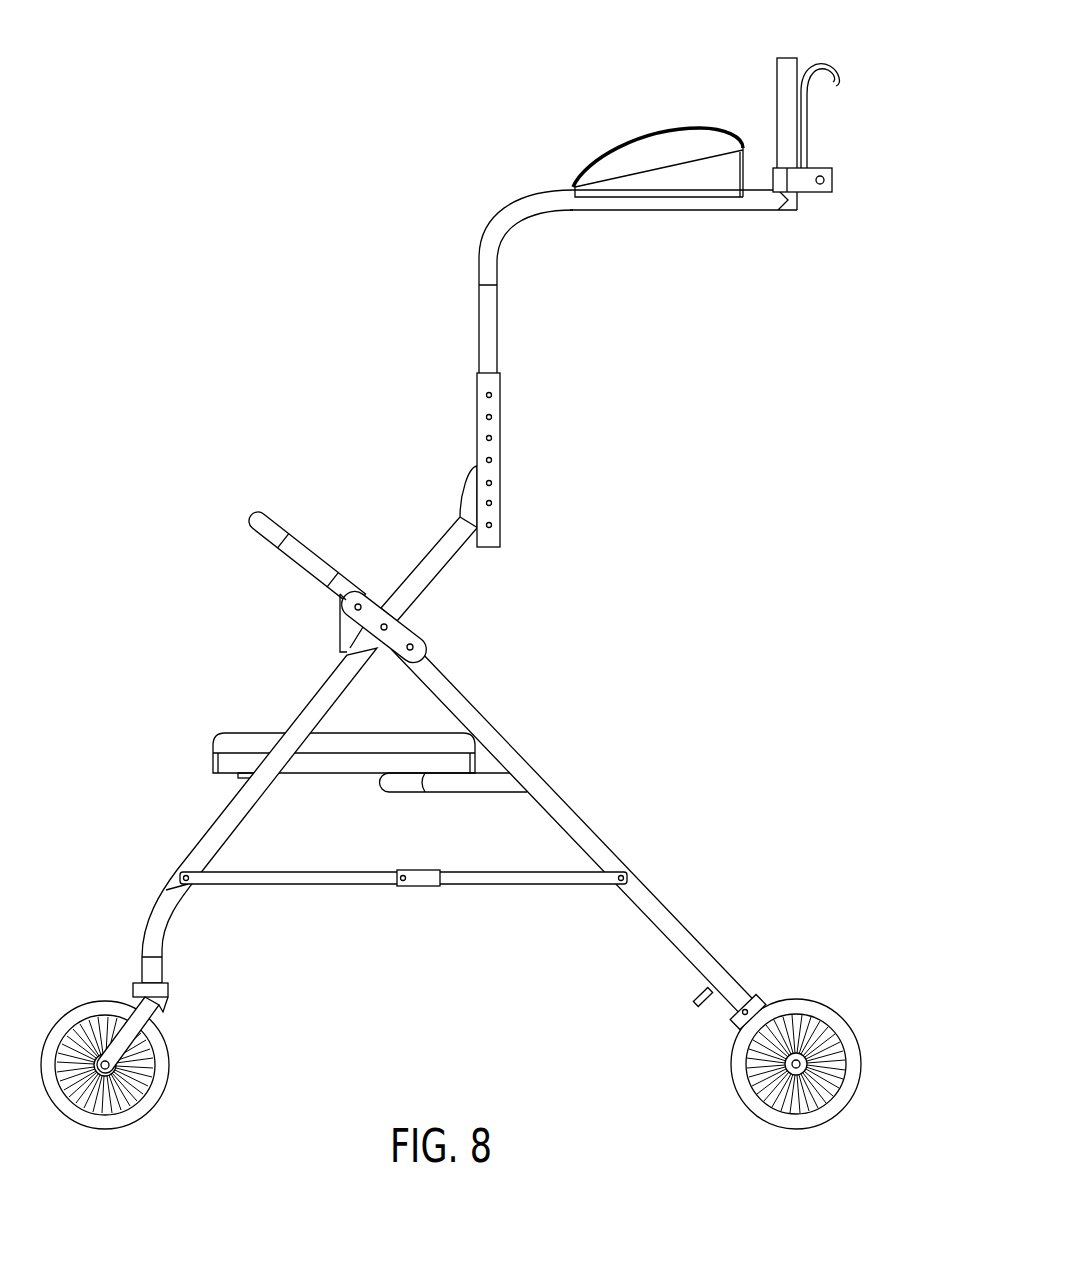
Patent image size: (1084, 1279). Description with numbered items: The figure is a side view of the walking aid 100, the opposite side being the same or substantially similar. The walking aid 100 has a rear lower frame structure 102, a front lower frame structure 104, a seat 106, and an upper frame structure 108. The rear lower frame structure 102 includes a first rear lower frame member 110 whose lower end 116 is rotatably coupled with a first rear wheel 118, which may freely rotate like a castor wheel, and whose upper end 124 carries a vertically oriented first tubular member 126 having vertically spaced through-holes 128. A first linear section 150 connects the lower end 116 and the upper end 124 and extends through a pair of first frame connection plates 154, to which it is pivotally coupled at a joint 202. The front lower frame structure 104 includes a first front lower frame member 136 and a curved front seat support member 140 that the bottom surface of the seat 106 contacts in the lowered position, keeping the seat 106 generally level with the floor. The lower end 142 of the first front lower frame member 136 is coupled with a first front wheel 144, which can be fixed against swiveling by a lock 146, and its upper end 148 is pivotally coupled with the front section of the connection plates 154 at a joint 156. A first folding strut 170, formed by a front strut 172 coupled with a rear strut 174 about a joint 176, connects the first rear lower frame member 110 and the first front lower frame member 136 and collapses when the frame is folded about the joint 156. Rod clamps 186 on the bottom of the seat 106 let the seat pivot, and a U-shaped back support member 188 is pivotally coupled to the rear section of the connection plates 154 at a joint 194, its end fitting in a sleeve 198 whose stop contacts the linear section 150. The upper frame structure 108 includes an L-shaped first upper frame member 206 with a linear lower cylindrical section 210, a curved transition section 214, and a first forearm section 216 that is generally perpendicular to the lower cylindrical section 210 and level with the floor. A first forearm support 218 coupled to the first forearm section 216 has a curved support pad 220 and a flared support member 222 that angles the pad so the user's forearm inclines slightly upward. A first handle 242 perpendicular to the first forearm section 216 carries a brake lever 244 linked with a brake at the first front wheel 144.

The walking aid 100 is at (410, 100).
The rear lower frame structure 102 is at (175, 848).
The front lower frame structure 104 is at (650, 962).
The seat 106 is at (220, 740).
The upper frame structure 108 is at (352, 300).
The first rear lower frame member 110 is at (232, 825).
The lower end 116 is at (108, 990).
The first rear wheel 118 is at (130, 1120).
The upper end 124 is at (505, 473).
The first tubular member 126 is at (495, 447).
The through-holes 128 is at (486, 438).
The first front lower frame member 136 is at (660, 905).
The front seat support member 140 is at (478, 792).
The lower end 142 is at (838, 1000).
The first front wheel 144 is at (765, 1115).
The lock 146 is at (730, 1025).
The upper end 148 is at (397, 663).
The first linear section 150 is at (300, 705).
The first frame connection plates 154 is at (412, 657).
The joint 156 is at (413, 647).
The first folding strut 170 is at (366, 896).
The front strut 172 is at (478, 886).
The rear strut 174 is at (295, 886).
The joint 176 is at (403, 875).
The rod clamps 186 is at (245, 778).
The back support member 188 is at (265, 545).
The joint 194 is at (361, 605).
The sleeve 198 is at (340, 600).
The joint 202 is at (392, 624).
The first upper frame member 206 is at (510, 327).
The lower cylindrical section 210 is at (497, 345).
The curved transition section 214 is at (512, 232).
The first forearm section 216 is at (690, 200).
The first forearm support 218 is at (590, 132).
The curved support pad 220 is at (660, 138).
The flared support member 222 is at (650, 186).
The first handle 242 is at (790, 58).
The brake lever 244 is at (828, 80).